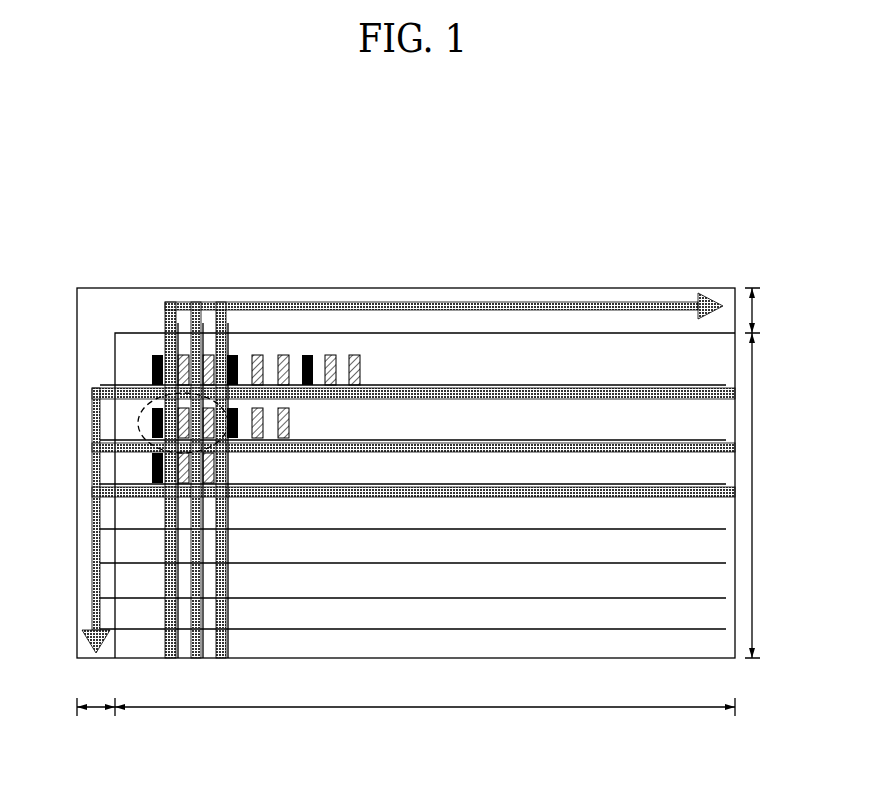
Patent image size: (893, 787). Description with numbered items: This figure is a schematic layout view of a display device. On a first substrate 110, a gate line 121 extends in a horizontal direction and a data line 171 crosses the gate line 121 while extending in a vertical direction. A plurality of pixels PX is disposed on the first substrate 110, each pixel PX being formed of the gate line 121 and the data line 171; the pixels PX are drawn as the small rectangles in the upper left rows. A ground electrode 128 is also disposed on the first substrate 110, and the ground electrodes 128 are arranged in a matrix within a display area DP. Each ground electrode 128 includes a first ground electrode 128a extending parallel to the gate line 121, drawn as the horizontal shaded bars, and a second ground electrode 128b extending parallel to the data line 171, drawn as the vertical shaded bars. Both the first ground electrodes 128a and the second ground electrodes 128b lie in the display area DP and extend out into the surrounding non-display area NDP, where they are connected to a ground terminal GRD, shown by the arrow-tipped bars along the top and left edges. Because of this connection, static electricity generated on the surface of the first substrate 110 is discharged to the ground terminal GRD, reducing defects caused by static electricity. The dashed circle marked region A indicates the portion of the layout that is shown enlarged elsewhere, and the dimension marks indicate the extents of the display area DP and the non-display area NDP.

The first substrate 110 is at (592, 288).
The gate line 121 is at (412, 385).
The ground electrode 128 is at (386, 419).
The first ground electrode 128a is at (503, 389).
The second ground electrode 128b is at (226, 343).
The data line 171 is at (176, 350).
The ground terminal GRD is at (718, 293).
The pixel PX is at (151, 367).
The region A is at (150, 430).
The non-display area NDP is at (438, 515).
The display area DP is at (450, 538).